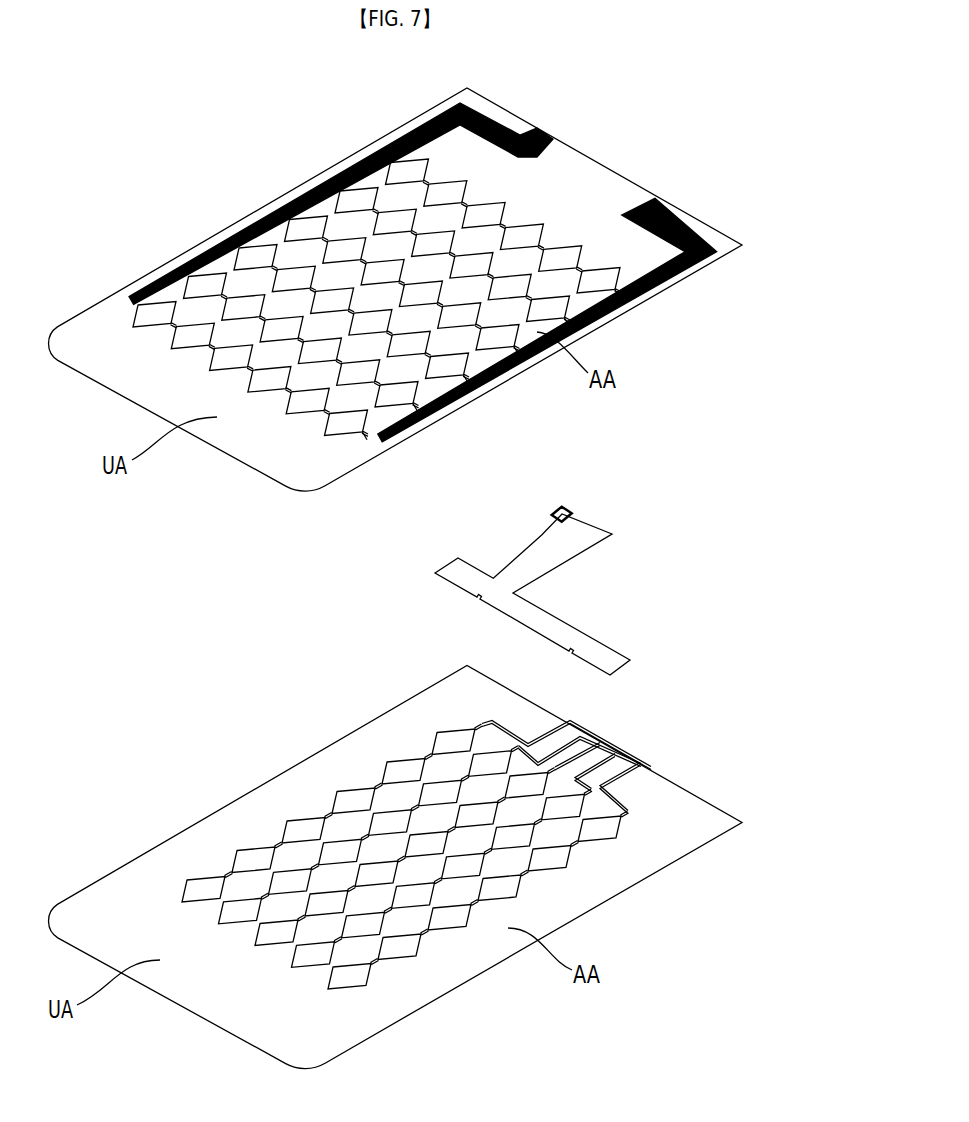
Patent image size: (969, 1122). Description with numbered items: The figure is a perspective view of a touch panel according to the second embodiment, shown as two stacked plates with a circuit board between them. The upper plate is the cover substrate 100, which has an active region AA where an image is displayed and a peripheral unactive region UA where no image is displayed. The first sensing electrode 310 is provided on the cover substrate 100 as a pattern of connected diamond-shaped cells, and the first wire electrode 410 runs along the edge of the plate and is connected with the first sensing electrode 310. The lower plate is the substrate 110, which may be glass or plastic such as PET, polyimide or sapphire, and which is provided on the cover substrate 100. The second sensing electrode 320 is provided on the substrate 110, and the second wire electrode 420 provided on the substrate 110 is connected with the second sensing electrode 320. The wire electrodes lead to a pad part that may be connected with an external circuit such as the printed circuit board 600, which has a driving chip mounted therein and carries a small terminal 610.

The cover substrate 100 is at (297, 187).
The substrate 110 is at (297, 763).
The first sensing electrode 310 is at (600, 277).
The second sensing electrode 320 is at (610, 833).
The first wire electrode 410 is at (393, 160).
The second wire electrode 420 is at (590, 750).
The printed circuit board 600 is at (543, 565).
The connection terminal 610 is at (571, 510).